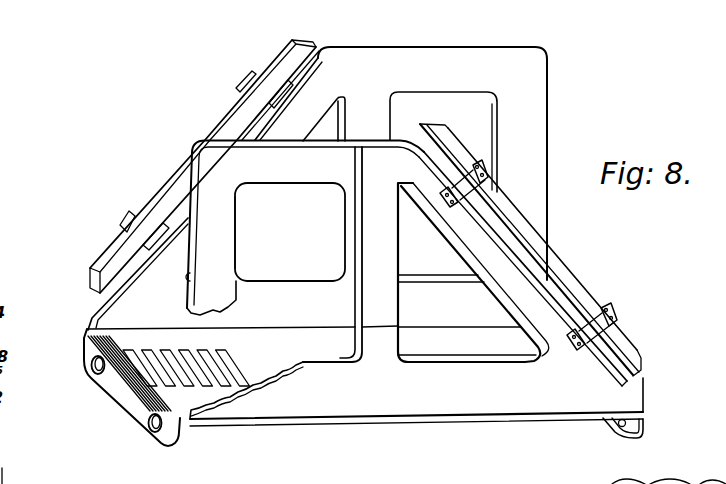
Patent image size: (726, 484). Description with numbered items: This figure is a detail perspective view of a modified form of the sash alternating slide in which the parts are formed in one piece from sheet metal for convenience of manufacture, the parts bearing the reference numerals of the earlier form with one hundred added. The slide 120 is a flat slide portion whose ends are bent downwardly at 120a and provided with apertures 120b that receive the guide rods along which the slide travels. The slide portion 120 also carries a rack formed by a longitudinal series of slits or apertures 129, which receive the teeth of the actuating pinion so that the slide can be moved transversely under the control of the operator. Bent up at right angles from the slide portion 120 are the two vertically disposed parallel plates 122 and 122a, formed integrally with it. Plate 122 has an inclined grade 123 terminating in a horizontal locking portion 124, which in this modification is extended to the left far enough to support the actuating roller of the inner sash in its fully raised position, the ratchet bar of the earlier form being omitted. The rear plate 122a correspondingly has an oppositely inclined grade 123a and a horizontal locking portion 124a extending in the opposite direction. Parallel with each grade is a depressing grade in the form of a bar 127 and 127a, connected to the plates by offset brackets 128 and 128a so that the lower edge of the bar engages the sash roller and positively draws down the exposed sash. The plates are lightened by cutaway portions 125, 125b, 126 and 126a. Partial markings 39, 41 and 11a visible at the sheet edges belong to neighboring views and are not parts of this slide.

The slide 120 is at (380, 412).
The downwardly bent ends of the slide portion 120a is at (118, 397).
The apertures 120b is at (95, 373).
The plate 122 is at (349, 254).
The rear plate 122a is at (348, 119).
The inclined grade 123 is at (527, 268).
The inclined grade of the rear plate 123a is at (138, 262).
The horizontal locking portion 124 is at (247, 141).
The horizontal locking portion of the rear plate 124a is at (412, 48).
The cutaway portion 125 is at (237, 255).
The cutaway portion 125b is at (492, 124).
The cutaway portion 126 is at (460, 250).
The cutaway portion of the rear plate 126a is at (239, 189).
The depressing grade bar 127 is at (533, 239).
The depressing grade of the rear plate 127a is at (292, 57).
The brackets 128 is at (489, 172).
The brackets of the rear plate 128a is at (246, 70).
The slits or apertures 129 is at (223, 373).
The adjacent figure part 39 is at (6, 442).
The adjacent figure part 41 is at (10, 483).
The adjacent figure part 11a is at (663, 479).